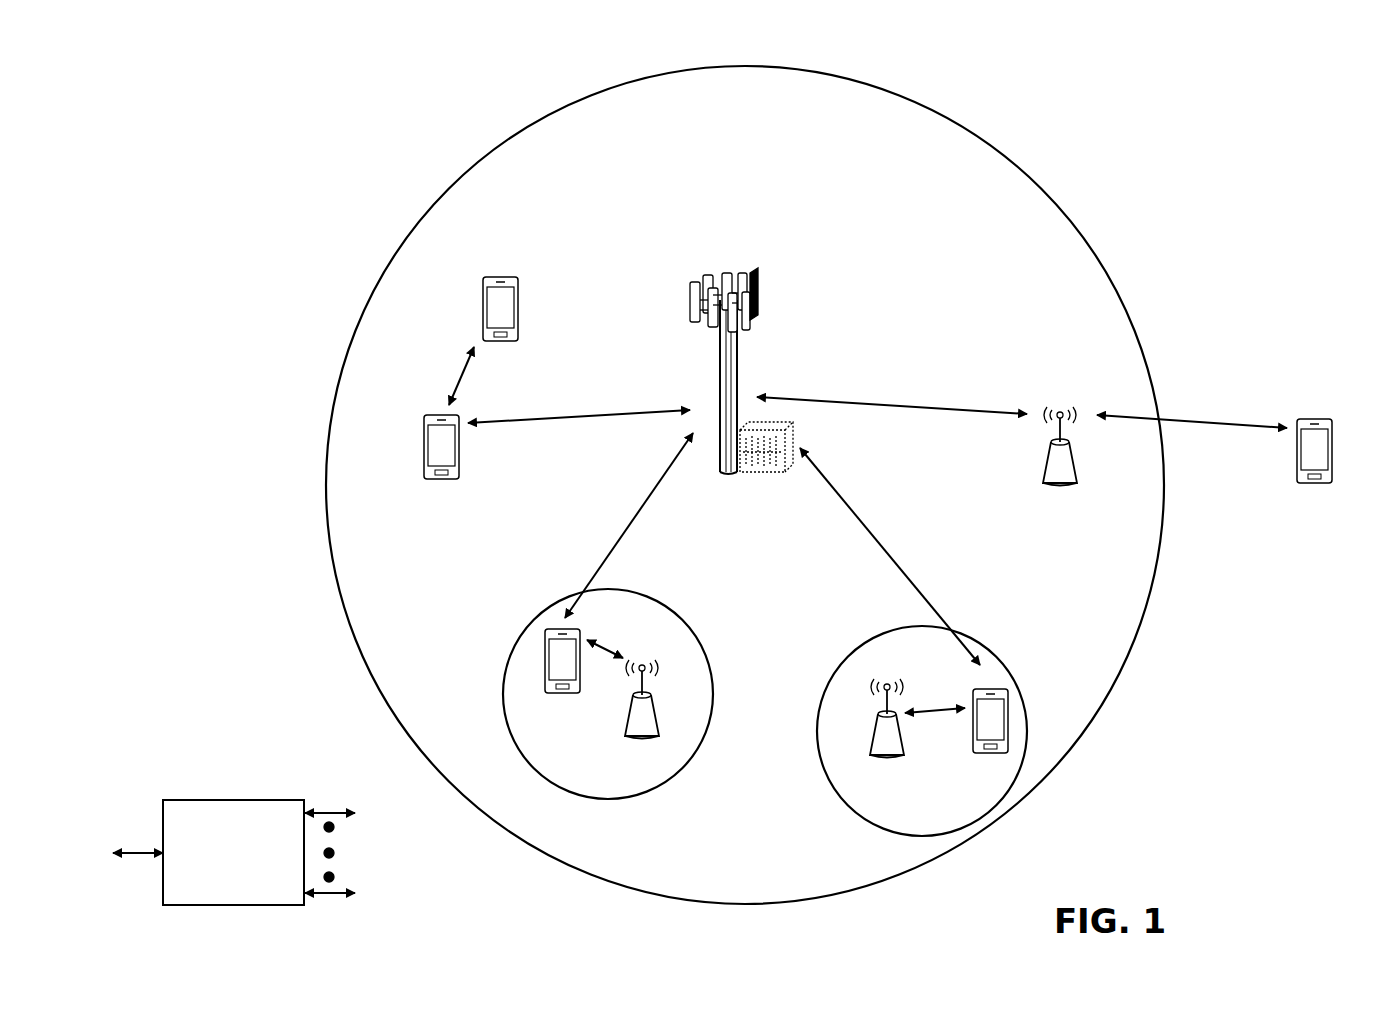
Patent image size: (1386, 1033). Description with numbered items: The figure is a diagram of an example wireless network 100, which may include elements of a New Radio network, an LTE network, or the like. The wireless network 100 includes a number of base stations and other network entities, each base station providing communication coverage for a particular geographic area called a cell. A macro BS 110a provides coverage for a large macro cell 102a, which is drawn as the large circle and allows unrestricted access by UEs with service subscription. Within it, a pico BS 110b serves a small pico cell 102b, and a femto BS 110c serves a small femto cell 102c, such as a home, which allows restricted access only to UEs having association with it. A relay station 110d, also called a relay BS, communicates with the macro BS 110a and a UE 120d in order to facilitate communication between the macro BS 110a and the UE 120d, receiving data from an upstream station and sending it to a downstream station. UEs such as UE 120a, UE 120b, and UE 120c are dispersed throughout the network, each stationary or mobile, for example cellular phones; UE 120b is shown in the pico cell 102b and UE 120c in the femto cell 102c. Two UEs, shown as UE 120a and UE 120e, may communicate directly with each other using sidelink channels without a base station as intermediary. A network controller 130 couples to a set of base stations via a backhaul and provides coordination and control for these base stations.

The wireless network 100 is at (214, 59).
The macro cell 102a is at (1024, 170).
The pico cell 102b is at (696, 634).
The femto cell 102c is at (859, 646).
The macro BS 110a is at (736, 266).
The pico BS 110b is at (660, 726).
The femto BS 110c is at (872, 740).
The relay station 110d is at (1063, 403).
The UE 120a is at (422, 447).
The UE 120b is at (553, 696).
The UE 120c is at (977, 755).
The UE 120d is at (1326, 416).
The UE 120e is at (481, 296).
The network controller 130 is at (232, 798).